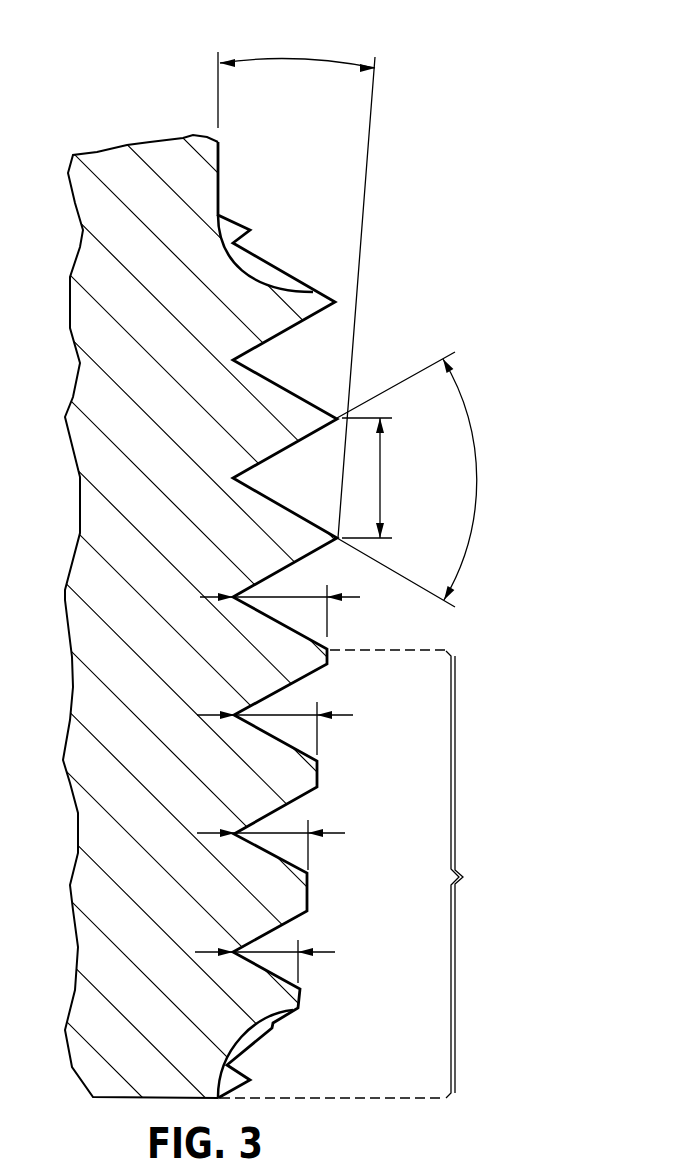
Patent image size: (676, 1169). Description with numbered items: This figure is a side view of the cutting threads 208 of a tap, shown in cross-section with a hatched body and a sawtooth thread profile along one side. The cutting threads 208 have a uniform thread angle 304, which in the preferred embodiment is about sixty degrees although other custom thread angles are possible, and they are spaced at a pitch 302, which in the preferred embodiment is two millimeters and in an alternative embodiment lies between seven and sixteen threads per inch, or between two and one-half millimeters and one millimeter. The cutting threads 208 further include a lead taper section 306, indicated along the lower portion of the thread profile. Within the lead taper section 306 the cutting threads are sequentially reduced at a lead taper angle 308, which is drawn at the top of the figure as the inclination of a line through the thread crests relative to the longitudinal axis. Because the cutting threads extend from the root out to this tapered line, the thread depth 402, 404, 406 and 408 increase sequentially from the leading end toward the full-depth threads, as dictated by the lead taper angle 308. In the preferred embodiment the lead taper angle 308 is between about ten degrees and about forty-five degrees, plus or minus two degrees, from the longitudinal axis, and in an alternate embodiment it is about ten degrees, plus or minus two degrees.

The cutting threads 208 is at (308, 782).
The pitch 302 is at (380, 478).
The thread angle 304 is at (478, 477).
The lead taper section 306 is at (365, 874).
The lead taper angle 308 is at (297, 62).
The thread depth 402 is at (317, 955).
The thread depth 404 is at (330, 838).
The thread depth 406 is at (342, 720).
The thread depth 408 is at (345, 600).